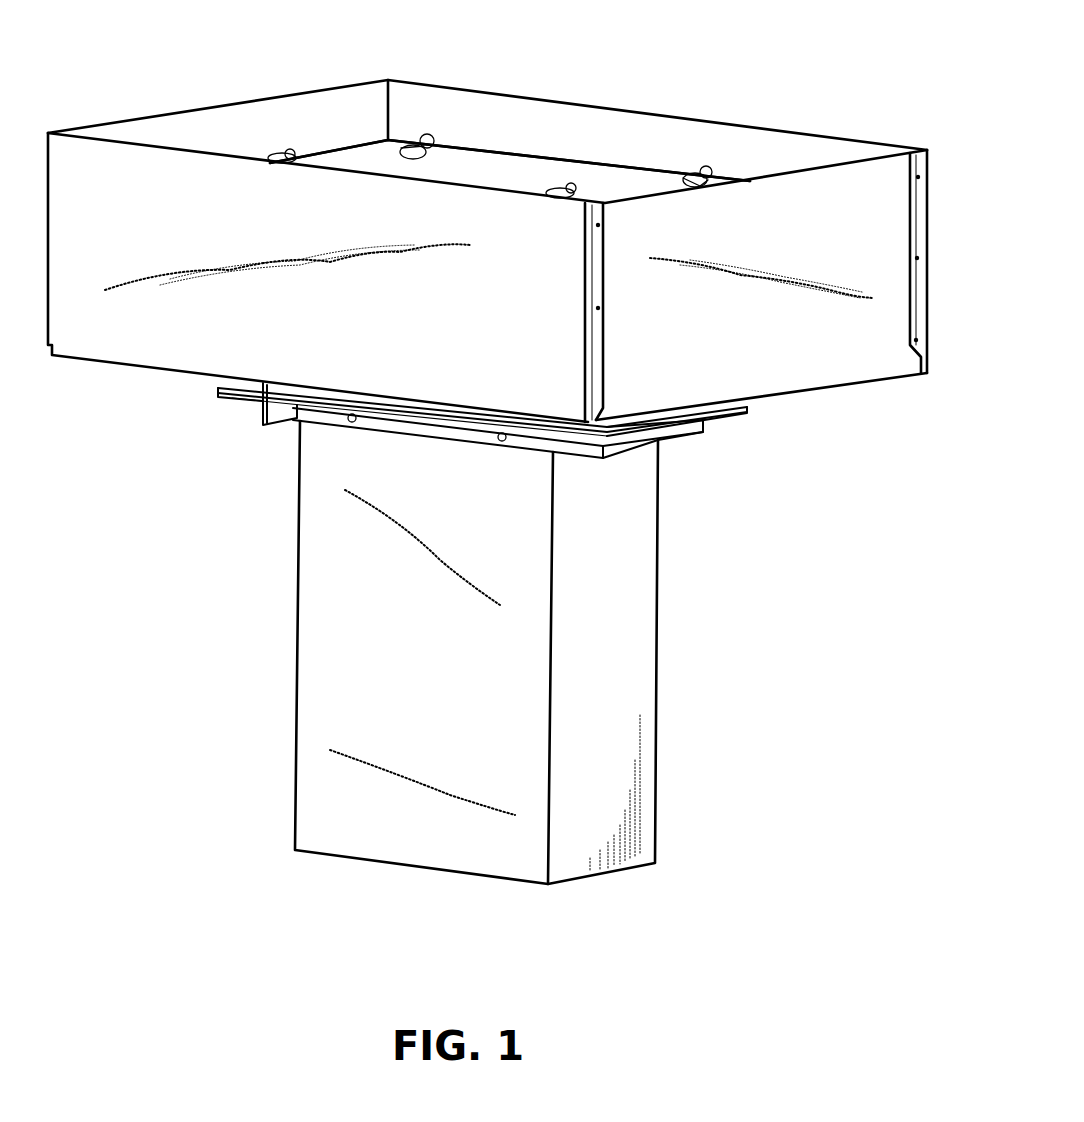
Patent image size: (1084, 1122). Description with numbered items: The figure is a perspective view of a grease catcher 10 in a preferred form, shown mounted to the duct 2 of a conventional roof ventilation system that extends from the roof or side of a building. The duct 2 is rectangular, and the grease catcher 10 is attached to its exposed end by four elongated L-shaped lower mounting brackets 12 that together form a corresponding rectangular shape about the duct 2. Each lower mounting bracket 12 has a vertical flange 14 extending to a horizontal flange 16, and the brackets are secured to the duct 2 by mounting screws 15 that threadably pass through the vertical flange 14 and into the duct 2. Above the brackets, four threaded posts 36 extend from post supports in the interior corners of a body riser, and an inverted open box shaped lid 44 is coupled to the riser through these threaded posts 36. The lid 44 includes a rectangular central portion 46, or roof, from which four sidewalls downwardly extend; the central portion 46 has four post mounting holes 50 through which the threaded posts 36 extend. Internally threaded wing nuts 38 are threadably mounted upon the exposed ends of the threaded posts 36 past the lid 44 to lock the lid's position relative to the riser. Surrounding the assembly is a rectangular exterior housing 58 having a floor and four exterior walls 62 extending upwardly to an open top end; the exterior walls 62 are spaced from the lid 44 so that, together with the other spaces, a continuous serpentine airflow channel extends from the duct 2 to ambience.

The duct 2 is at (293, 582).
The grease catcher 10 is at (505, 446).
The lower mounting bracket 12 is at (420, 437).
The vertical flange 14 is at (275, 413).
The mounting screw 15 is at (500, 441).
The horizontal flange 16 is at (240, 393).
The threaded post 36 is at (693, 168).
The wing nut 38 is at (717, 172).
The lid 44 is at (492, 173).
The central portion 46 is at (362, 157).
The post mounting hole 50 is at (448, 162).
The exterior housing 58 is at (845, 352).
The exterior wall 62 is at (795, 372).